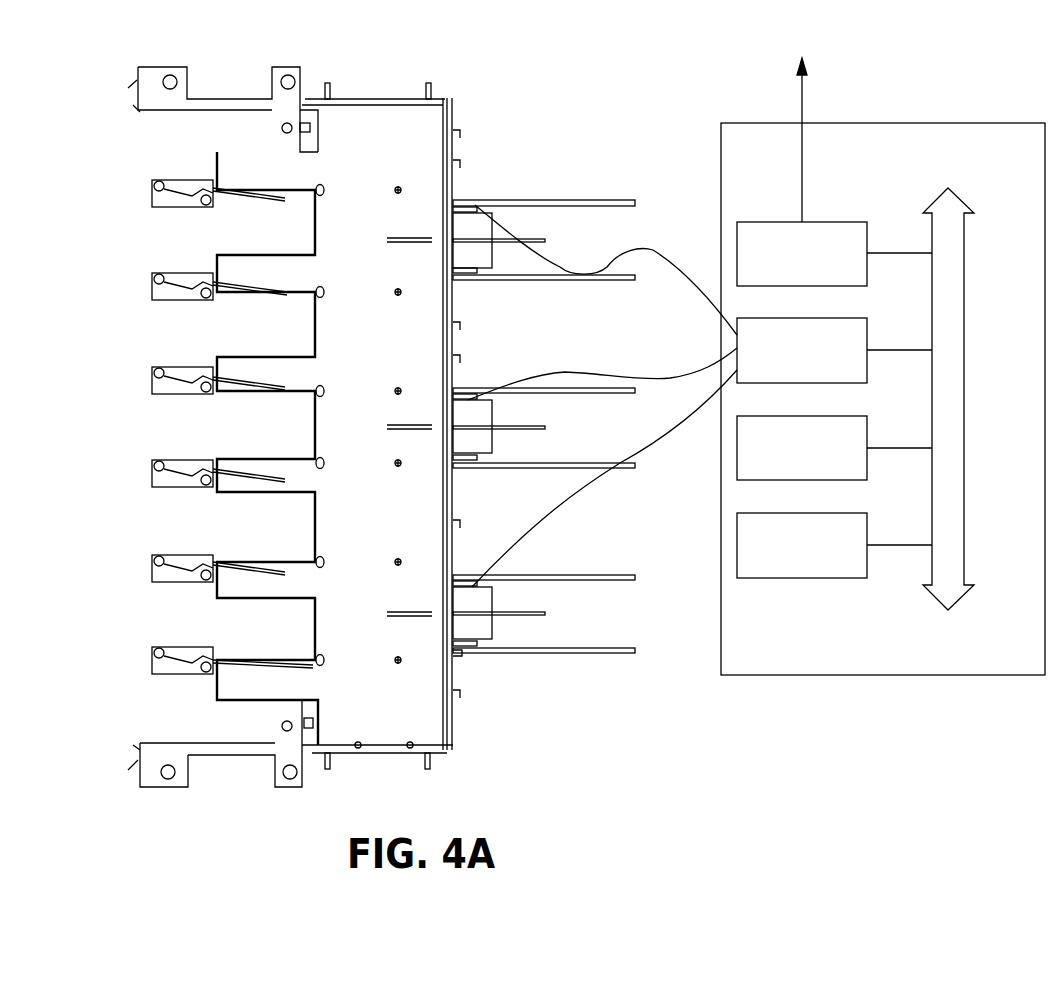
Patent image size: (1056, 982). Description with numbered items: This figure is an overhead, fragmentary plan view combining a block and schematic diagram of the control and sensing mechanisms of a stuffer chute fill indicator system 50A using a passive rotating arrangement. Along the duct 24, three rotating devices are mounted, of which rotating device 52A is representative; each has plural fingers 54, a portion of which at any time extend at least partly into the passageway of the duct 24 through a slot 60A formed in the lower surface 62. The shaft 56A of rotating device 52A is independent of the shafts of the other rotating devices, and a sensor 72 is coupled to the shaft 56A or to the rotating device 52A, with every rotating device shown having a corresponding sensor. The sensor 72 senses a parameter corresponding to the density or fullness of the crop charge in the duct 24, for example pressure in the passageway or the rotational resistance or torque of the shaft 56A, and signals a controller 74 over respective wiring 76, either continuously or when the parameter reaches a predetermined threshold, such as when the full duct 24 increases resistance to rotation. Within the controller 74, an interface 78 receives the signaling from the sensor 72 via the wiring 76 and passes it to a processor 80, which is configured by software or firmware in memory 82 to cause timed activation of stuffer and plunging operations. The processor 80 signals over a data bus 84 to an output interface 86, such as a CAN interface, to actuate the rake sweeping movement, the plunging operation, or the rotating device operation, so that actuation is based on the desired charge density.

The duct 24 is at (290, 427).
The stuffer chute fill indicator system 50A is at (637, 85).
The rotating device 52A is at (490, 632).
The fingers 54 is at (538, 615).
The shaft 56A is at (467, 662).
The slot 60A is at (430, 625).
The lower surface 62 is at (446, 690).
The sensor 72 is at (467, 583).
The controller 74 is at (883, 366).
The wiring 76 is at (690, 425).
The interface 78 is at (802, 350).
The processor 80 is at (802, 448).
The memory 82 is at (802, 545).
The data bus 84 is at (964, 452).
The output interface 86 is at (802, 254).